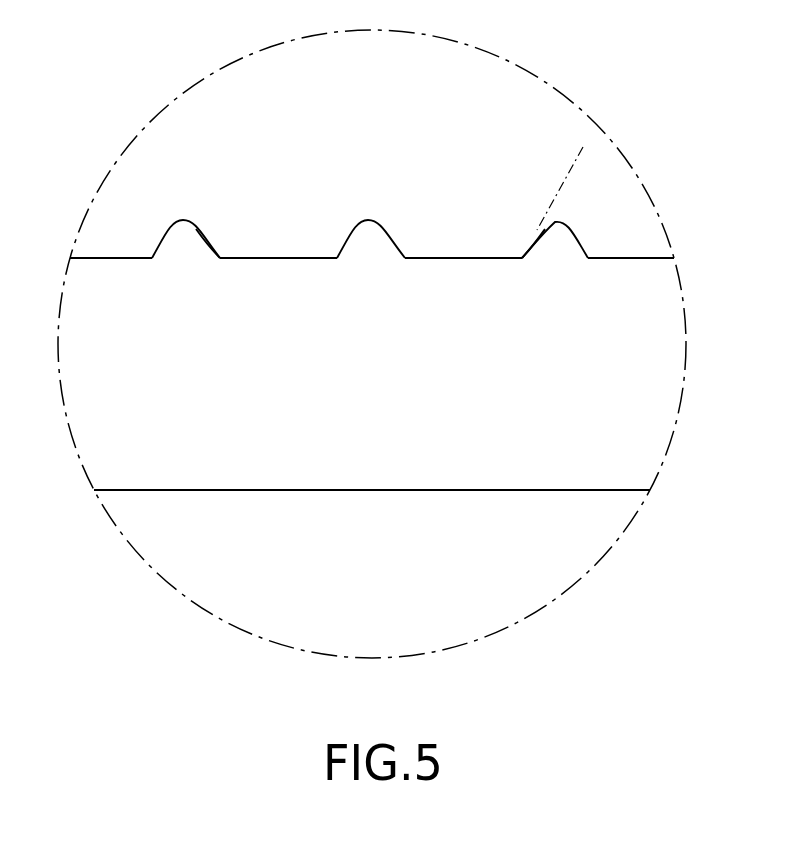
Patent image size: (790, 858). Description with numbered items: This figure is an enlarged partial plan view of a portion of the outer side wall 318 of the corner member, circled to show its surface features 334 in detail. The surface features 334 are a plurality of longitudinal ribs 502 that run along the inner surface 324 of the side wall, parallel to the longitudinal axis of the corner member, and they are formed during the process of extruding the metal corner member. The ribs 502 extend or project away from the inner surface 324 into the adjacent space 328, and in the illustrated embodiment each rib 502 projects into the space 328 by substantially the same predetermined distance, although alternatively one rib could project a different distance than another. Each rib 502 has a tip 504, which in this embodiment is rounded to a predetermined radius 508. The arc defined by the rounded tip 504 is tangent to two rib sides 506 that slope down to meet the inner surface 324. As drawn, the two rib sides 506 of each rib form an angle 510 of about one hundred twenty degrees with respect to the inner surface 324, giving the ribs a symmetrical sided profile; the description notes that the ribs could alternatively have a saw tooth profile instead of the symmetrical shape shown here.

The outer side wall 318 is at (305, 427).
The inner surface 324 is at (427, 258).
The space 328 is at (347, 75).
The surface features 334 is at (158, 110).
The longitudinal rib 502 is at (340, 222).
The tip 504 is at (183, 220).
The rib side 506 is at (213, 247).
The radius 508 is at (378, 222).
The angle 510 is at (457, 253).